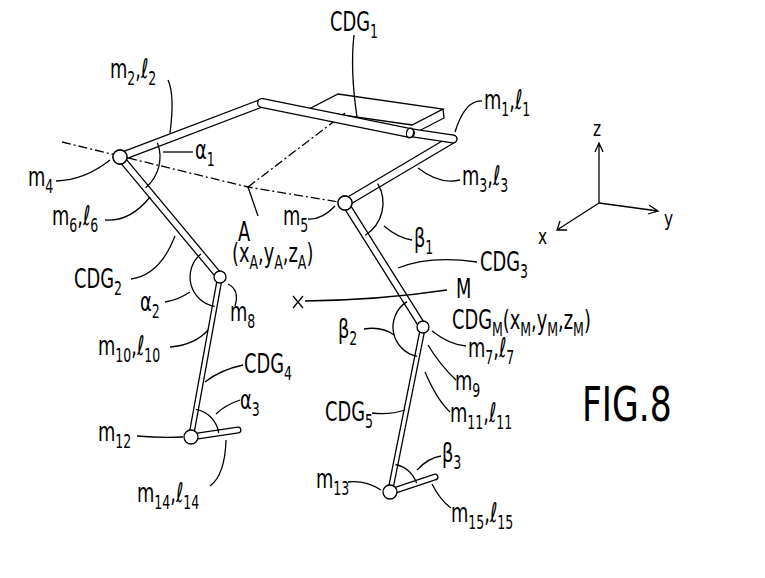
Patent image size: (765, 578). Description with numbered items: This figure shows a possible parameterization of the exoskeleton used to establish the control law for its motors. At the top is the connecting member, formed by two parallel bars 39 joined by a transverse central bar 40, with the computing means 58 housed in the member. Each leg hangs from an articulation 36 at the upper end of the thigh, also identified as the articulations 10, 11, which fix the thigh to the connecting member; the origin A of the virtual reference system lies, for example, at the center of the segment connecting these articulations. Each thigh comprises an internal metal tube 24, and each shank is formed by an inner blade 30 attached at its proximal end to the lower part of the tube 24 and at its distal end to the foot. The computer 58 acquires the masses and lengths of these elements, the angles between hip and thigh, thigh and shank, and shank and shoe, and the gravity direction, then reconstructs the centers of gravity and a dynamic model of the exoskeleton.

The articulation 10 is at (96, 127).
The articulation 11 is at (400, 204).
The articulation 36 is at (232, 180).
The internal metal tube 24 is at (291, 242).
The inner blade 30 is at (275, 384).
The parallel bars 39 is at (318, 127).
The transverse central bar 40 is at (338, 90).
The computing means 58 is at (375, 88).